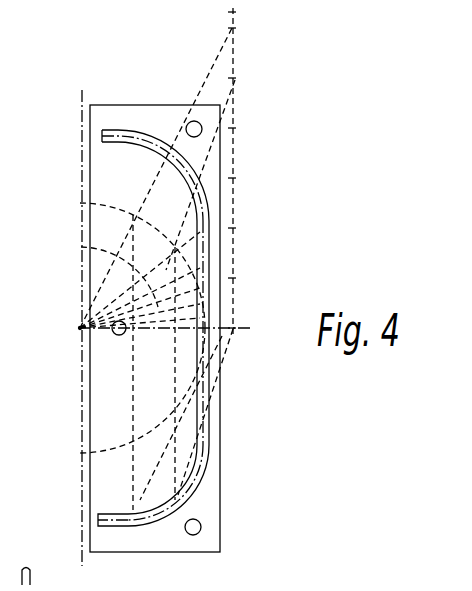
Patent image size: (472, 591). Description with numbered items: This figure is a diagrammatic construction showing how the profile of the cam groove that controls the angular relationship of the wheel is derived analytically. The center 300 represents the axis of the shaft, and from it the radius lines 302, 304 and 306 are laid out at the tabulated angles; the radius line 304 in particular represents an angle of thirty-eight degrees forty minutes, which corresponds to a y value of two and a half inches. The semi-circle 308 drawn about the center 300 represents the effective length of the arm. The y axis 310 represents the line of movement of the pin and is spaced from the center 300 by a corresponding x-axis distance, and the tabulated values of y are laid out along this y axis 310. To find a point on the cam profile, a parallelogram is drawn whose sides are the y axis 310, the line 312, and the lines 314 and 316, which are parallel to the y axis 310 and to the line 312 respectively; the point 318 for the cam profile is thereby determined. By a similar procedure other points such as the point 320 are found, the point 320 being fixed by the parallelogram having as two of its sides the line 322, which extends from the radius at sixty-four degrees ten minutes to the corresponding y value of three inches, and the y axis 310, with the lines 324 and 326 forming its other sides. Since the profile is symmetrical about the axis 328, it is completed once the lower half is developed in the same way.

The center 300 is at (78, 328).
The radius line 302 is at (113, 257).
The radius line 304 is at (140, 276).
The radius line 306 is at (148, 292).
The semi-circle 308 is at (100, 202).
The y axis 310 is at (240, 158).
The line 312 is at (197, 178).
The line 314 is at (180, 458).
The line 316 is at (220, 358).
The point 318 is at (177, 507).
The point 320 is at (137, 527).
The line 322 is at (203, 90).
The line 324 is at (130, 425).
The line 326 is at (138, 500).
The axis 328 is at (233, 328).